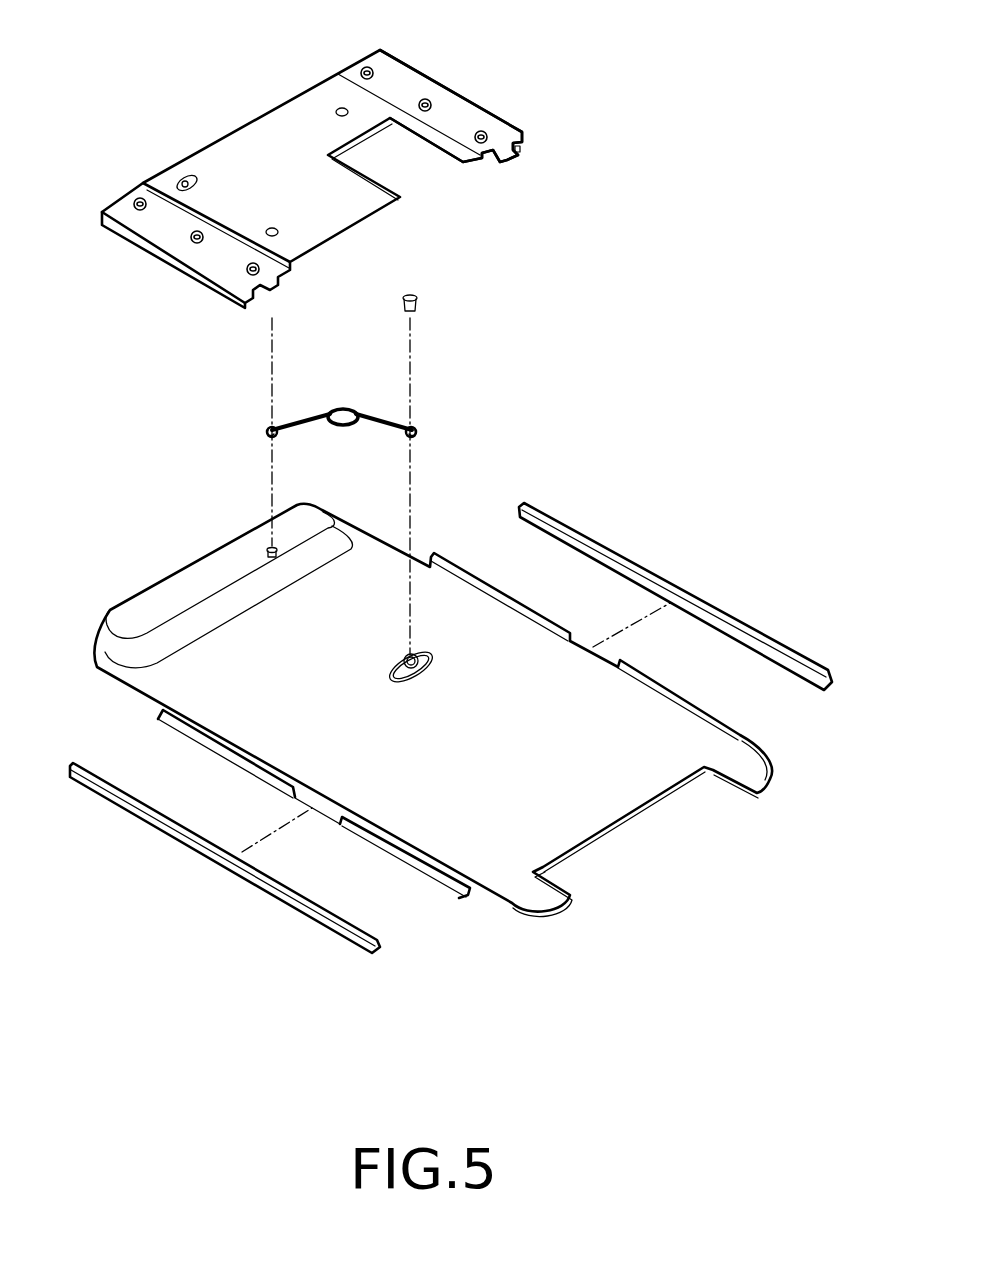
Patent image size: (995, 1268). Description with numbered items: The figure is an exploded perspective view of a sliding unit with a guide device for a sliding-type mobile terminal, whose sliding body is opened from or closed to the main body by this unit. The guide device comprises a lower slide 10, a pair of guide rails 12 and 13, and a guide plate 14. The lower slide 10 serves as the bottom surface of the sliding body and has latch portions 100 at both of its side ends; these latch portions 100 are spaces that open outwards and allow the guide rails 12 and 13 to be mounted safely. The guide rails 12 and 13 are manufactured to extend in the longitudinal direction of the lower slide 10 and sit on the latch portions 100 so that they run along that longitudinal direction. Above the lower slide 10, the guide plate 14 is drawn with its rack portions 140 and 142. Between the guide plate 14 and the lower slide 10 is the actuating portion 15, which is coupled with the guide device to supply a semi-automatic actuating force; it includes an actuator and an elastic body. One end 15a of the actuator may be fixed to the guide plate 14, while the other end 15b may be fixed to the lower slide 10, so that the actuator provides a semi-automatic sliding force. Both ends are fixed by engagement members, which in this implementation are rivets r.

The lower slide 10 is at (433, 736).
The latch portions 100 is at (442, 888).
The guide rail 12 is at (745, 601).
The guide rail 13 is at (275, 905).
The guide plate 14 is at (346, 175).
The rack portion 140 is at (167, 255).
The rack portion 142 is at (524, 134).
The actuating portion 15 is at (343, 362).
The end of the actuator 15a is at (265, 429).
The other end of the actuator 15b is at (424, 429).
The rivets r is at (418, 296).